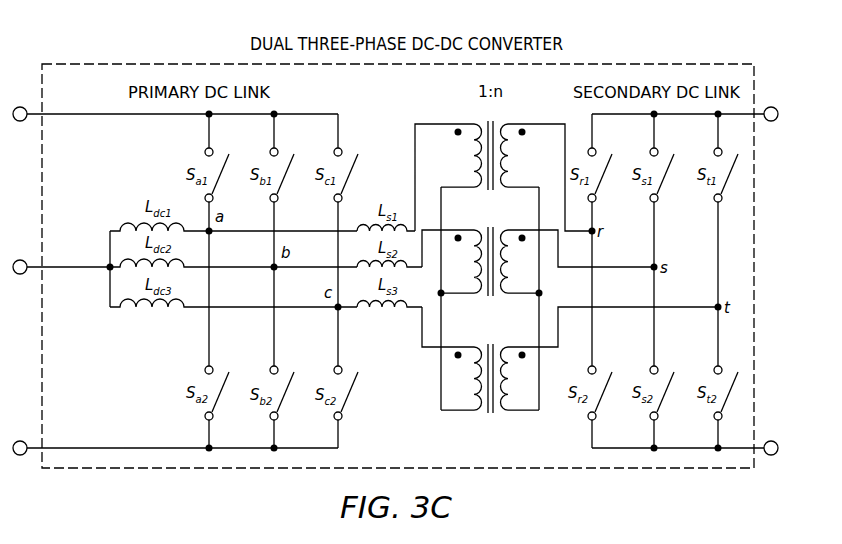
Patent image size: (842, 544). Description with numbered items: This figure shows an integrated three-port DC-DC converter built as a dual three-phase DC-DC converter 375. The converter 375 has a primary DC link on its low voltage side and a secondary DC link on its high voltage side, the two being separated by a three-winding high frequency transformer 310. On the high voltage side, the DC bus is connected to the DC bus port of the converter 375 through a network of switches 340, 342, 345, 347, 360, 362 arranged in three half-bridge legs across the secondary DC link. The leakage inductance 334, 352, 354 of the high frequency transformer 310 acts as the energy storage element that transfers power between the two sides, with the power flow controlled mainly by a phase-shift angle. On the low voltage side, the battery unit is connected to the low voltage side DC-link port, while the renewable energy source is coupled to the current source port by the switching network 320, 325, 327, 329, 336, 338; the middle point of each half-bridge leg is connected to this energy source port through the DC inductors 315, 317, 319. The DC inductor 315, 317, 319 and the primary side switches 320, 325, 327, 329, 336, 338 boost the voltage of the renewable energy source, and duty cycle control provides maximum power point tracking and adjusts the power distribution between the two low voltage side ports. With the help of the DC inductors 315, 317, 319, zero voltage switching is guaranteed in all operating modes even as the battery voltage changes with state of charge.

The high frequency transformer 310 is at (497, 118).
The DC inductor 315 is at (121, 223).
The DC inductor 317 is at (122, 259).
The DC inductor 319 is at (124, 312).
The primary side switch 320 is at (226, 166).
The primary side switch 325 is at (219, 398).
The primary side switch 327 is at (290, 167).
The primary side switch 329 is at (284, 398).
The leakage inductance 334 is at (357, 227).
The primary side switch 336 is at (354, 167).
The primary side switch 338 is at (348, 398).
The switch 340 is at (608, 167).
The switch 342 is at (601, 398).
The switch 345 is at (671, 167).
The switch 347 is at (664, 398).
The leakage inductance 352 is at (357, 263).
The leakage inductance 354 is at (357, 303).
The switch 360 is at (735, 164).
The switch 362 is at (733, 385).
The dual three-phase DC-DC converter 375 is at (692, 64).